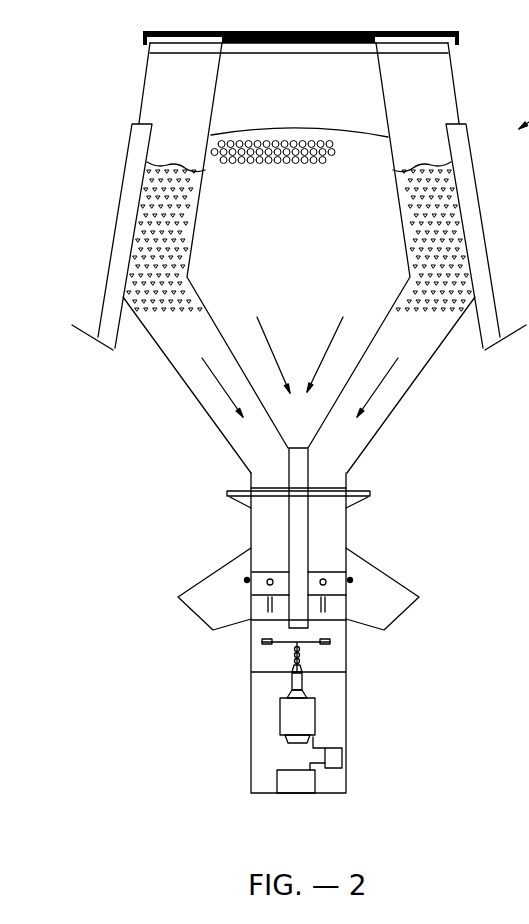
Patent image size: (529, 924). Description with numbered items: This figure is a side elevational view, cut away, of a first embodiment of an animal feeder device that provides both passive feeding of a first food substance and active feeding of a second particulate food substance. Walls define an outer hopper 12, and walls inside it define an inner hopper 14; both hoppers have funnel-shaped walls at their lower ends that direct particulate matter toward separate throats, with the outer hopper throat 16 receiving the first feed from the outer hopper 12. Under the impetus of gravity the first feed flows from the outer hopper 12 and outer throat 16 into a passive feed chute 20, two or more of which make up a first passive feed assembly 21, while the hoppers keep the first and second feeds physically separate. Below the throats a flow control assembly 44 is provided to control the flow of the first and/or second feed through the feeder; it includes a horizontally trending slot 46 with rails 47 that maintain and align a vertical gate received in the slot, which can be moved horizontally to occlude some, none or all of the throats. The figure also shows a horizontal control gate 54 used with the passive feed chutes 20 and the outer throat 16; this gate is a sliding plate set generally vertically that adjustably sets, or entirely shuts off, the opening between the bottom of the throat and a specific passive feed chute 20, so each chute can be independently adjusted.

The outer hopper 12 is at (460, 90).
The inner hopper 14 is at (387, 108).
The outer hopper throat 16 is at (347, 480).
The flow control assembly 44 is at (347, 492).
The rails 47 is at (233, 505).
The horizontally trending slot 46 is at (362, 503).
The passive feed chute 20 is at (400, 578).
The horizontal control gate 54 is at (335, 608).
The first passive feed assembly 21 is at (380, 640).